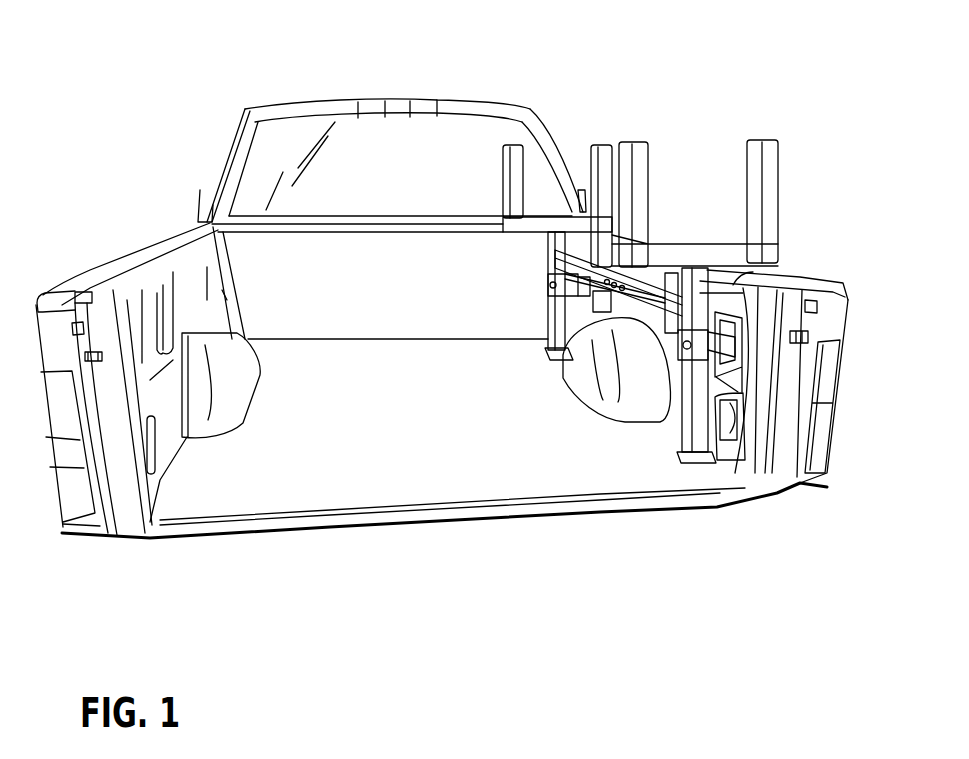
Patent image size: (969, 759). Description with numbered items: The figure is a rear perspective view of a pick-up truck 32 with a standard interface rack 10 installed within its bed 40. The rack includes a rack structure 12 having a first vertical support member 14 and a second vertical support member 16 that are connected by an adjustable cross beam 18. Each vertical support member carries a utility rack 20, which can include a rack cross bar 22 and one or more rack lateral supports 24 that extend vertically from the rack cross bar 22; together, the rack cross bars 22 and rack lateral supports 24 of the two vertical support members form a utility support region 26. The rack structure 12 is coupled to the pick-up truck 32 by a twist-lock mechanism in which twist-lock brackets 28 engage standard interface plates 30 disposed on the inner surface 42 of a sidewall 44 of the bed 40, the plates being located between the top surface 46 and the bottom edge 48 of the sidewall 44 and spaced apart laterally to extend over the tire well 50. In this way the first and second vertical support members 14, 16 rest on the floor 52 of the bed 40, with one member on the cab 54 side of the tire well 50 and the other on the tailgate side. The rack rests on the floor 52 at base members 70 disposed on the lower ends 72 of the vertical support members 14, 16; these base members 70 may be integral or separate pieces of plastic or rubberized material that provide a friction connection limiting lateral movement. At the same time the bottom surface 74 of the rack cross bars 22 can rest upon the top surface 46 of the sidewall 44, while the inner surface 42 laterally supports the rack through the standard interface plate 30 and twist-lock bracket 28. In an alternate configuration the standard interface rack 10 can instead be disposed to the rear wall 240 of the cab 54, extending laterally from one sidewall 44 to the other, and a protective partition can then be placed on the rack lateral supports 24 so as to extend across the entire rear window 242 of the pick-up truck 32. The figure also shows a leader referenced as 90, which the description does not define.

The standard interface rack 10 is at (737, 104).
The rack structure 12 is at (604, 120).
The first vertical support member 14 is at (687, 403).
The second vertical support member 16 is at (548, 313).
The adjustable cross beam 18 is at (553, 252).
The utility rack 20 is at (785, 213).
The rack cross bar 22 is at (709, 258).
The rack lateral support 24 is at (772, 177).
The utility support region 26 is at (665, 153).
The twist-lock bracket 28 is at (548, 284).
The standard interface plate 30 is at (778, 480).
The pick-up truck 32 is at (206, 166).
The bed 40 is at (270, 268).
The inner surface 42 is at (575, 330).
The sidewall 44 is at (733, 460).
The top surface 46 is at (796, 283).
The bottom edge 48 is at (727, 463).
The tire well 50 is at (600, 373).
The floor 52 is at (400, 443).
The cab 54 is at (300, 131).
The base member 70 is at (546, 356).
The lower end 72 is at (546, 344).
The bottom surface 74 is at (735, 292).
The connector 90 is at (683, 362).
The rear wall 240 is at (358, 290).
The rear window 242 is at (452, 155).